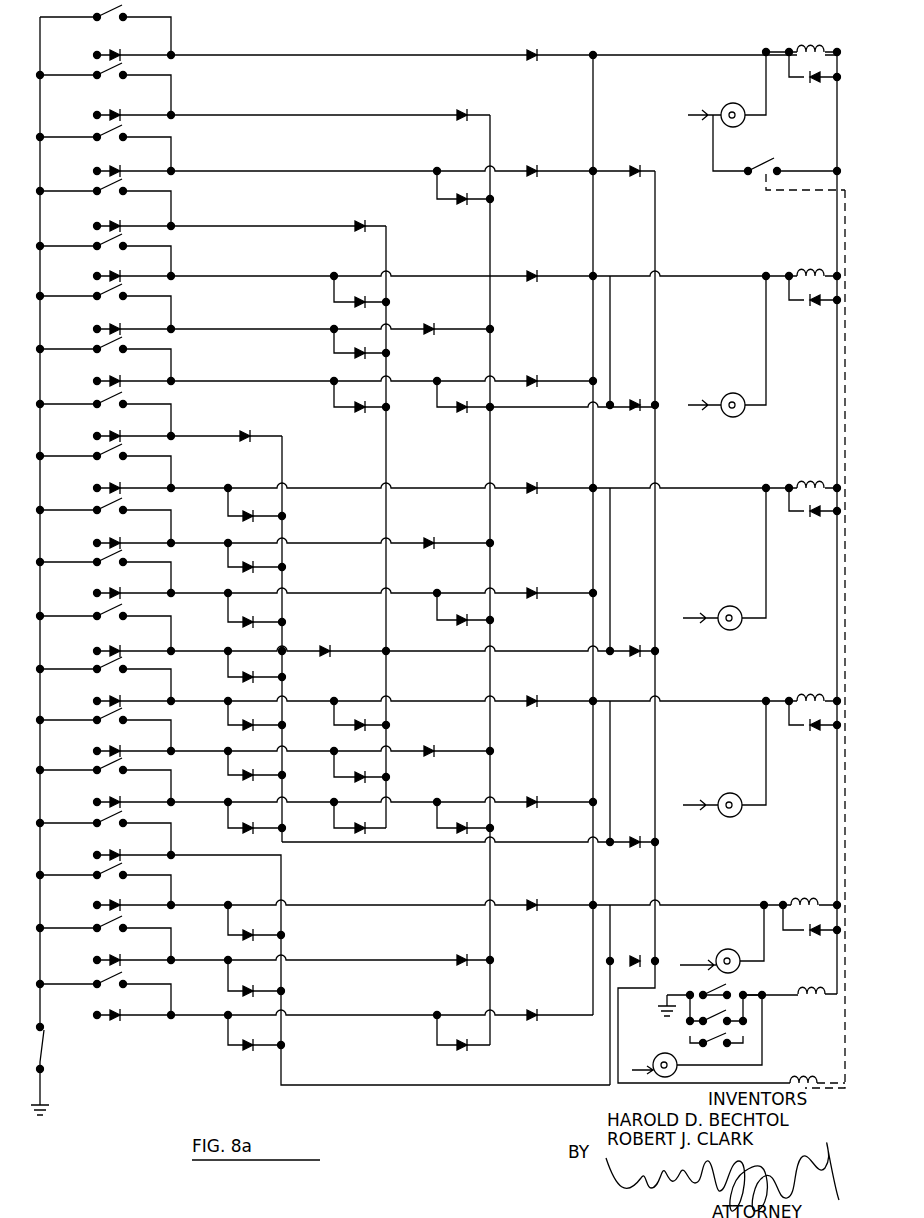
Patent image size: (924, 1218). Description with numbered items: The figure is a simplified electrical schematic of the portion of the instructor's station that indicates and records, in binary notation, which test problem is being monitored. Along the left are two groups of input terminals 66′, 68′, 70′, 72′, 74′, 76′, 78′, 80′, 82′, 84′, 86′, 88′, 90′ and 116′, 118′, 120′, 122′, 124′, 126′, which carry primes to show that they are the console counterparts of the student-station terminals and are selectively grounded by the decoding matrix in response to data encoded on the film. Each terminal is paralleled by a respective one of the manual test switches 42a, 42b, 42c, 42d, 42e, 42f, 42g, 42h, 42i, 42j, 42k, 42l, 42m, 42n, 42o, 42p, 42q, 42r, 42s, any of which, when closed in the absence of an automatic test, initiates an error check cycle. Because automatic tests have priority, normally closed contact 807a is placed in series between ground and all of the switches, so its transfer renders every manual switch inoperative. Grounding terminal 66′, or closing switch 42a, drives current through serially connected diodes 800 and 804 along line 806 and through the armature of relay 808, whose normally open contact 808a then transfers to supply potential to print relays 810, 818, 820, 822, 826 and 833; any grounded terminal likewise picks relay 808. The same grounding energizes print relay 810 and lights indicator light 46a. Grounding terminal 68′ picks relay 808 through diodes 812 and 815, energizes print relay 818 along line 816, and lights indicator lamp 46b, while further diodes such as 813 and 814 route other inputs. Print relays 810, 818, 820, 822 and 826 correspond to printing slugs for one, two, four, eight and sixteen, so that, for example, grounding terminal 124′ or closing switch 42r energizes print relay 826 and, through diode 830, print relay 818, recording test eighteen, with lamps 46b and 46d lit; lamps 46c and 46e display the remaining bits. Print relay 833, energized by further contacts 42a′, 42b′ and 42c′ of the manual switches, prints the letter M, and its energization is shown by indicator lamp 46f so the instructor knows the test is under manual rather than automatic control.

The manual test switch 42a is at (112, 19).
The manual test switch 42b is at (112, 77).
The manual test switch 42c is at (112, 139).
The manual test switch 42d is at (112, 193).
The manual test switch 42e is at (112, 248).
The manual test switch 42f is at (112, 298).
The manual test switch 42g is at (112, 351).
The manual test switch 42h is at (112, 406).
The manual test switch 42i is at (112, 458).
The manual test switch 42j is at (112, 512).
The manual test switch 42k is at (112, 564).
The manual test switch 42l is at (112, 618).
The manual test switch 42m is at (112, 671).
The manual test switch 42n is at (112, 722).
The manual test switch 42o is at (112, 772).
The manual test switch 42p is at (112, 825).
The manual test switch 42q is at (112, 877).
The manual test switch 42r is at (112, 930).
The manual test switch 42s is at (112, 986).
The input terminal 66′ is at (113, 57).
The input terminal 68′ is at (113, 117).
The input terminal 70′ is at (113, 173).
The input terminal 72′ is at (113, 228).
The input terminal 74′ is at (113, 278).
The input terminal 76′ is at (113, 331).
The input terminal 78′ is at (113, 383).
The input terminal 80′ is at (113, 438).
The input terminal 82′ is at (113, 490).
The input terminal 84′ is at (113, 545).
The input terminal 86′ is at (113, 595).
The input terminal 88′ is at (113, 653).
The input terminal 90′ is at (113, 703).
The input terminal 116′ is at (111, 753).
The input terminal 118′ is at (111, 804).
The input terminal 120′ is at (111, 857).
The input terminal 122′ is at (111, 907).
The input terminal 124′ is at (111, 962).
The input terminal 126′ is at (111, 1017).
The diode 800 is at (538, 50).
The diode 804 is at (633, 162).
The diode 812 is at (460, 114).
The diode 813 is at (450, 200).
The diode 814 is at (535, 164).
The diode 815 is at (632, 412).
The diode 830 is at (462, 955).
The line 806 is at (658, 560).
The line 816 is at (662, 283).
The normally closed contact 807a is at (47, 1050).
The normally open contact 808a is at (762, 155).
The relay 808 is at (788, 1078).
The print relay 810 is at (822, 47).
The print relay 818 is at (830, 266).
The print relay 820 is at (786, 482).
The print relay 822 is at (781, 689).
The print relay 826 is at (781, 899).
The print relay 833 is at (802, 996).
The indicator light 46a is at (714, 108).
The indicator lamp 46b is at (718, 398).
The indicator lamp 46c is at (711, 611).
The indicator light 46d is at (714, 795).
The indicator lamp 46e is at (714, 954).
The indicator lamp 46f is at (664, 1042).
The further contact 42a′ is at (710, 991).
The further contact 42b′ is at (717, 1010).
The further contact 42c′ is at (716, 1049).